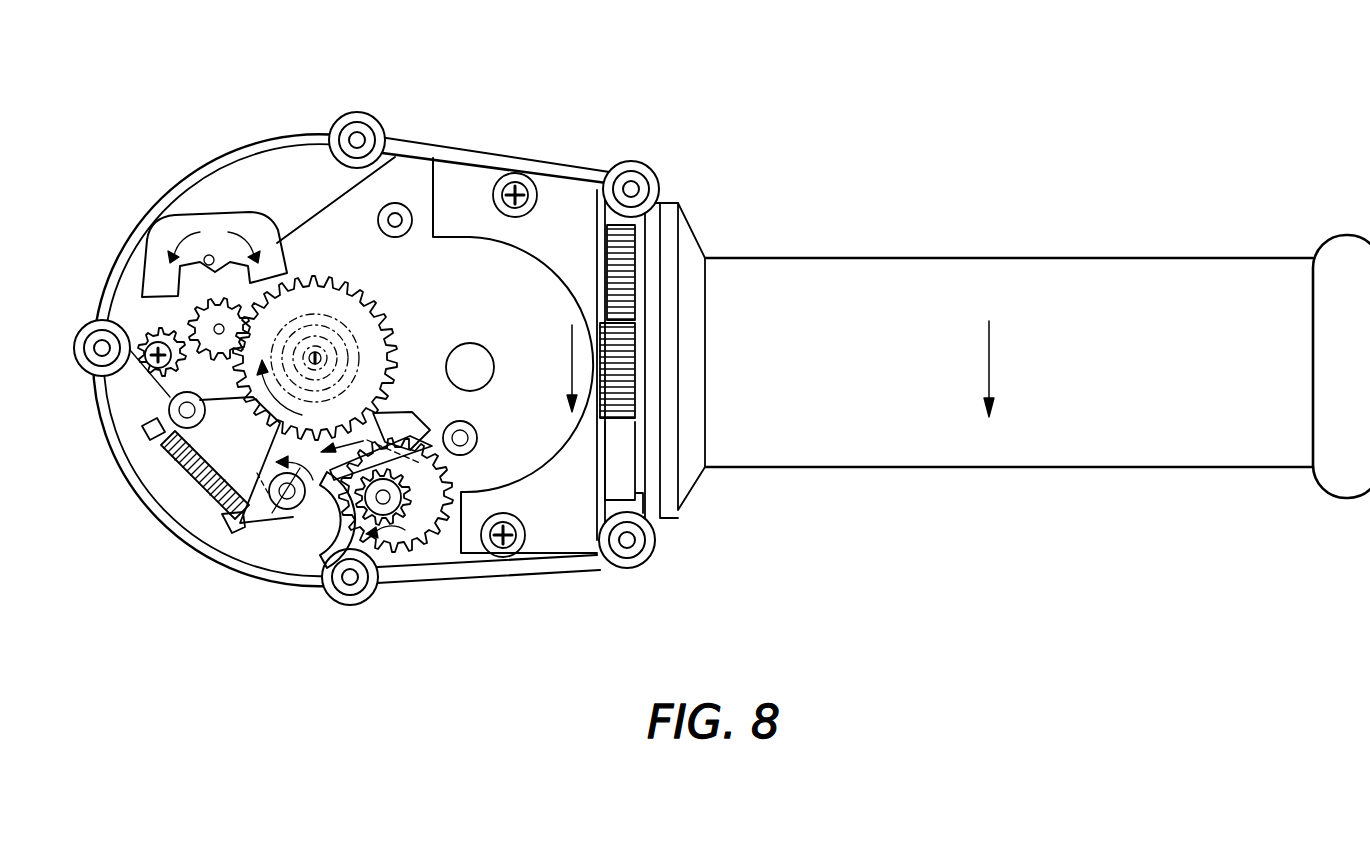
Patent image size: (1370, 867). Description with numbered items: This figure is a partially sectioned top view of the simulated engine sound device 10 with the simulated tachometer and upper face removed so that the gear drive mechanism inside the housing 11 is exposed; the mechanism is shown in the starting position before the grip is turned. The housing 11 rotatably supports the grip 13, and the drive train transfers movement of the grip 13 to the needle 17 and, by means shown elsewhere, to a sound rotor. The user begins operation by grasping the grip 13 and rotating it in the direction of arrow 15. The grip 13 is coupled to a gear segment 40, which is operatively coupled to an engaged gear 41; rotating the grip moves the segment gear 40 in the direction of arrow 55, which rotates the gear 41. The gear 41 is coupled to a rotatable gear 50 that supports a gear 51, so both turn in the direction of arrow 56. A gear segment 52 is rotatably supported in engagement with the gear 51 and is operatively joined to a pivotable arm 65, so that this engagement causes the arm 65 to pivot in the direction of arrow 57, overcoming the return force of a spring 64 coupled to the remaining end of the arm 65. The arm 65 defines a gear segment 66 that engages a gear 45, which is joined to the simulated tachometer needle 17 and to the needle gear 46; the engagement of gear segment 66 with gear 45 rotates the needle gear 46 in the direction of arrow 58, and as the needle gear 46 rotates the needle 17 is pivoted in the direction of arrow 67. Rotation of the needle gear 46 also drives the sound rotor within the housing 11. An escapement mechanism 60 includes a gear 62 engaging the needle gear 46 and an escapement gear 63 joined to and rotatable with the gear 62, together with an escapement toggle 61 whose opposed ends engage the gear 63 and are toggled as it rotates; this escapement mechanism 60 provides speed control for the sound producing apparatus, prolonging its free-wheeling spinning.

The simulated engine sound device 10 is at (841, 202).
The housing 11 is at (402, 140).
The grip 13 is at (975, 258).
The arrow 15 is at (989, 372).
The needle 17 is at (457, 473).
The gear segment 40 is at (627, 278).
The gear 41 is at (627, 370).
The gear 45 is at (403, 328).
The needle gear 46 is at (387, 313).
The gear 50 is at (433, 530).
The gear 51 is at (421, 560).
The gear segment 52 is at (280, 563).
The arrow 55 is at (570, 365).
The arrow 56 is at (410, 560).
The arrow 57 is at (260, 487).
The arrow 58 is at (275, 410).
The escapement mechanism 60 is at (256, 180).
The escapement toggle 61 is at (207, 213).
The gear 62 is at (177, 317).
The escapement gear 63 is at (170, 355).
The spring 64 is at (172, 514).
The pivotable arm 65 is at (417, 442).
The gear segment 66 is at (387, 413).
The arrow 67 is at (340, 423).